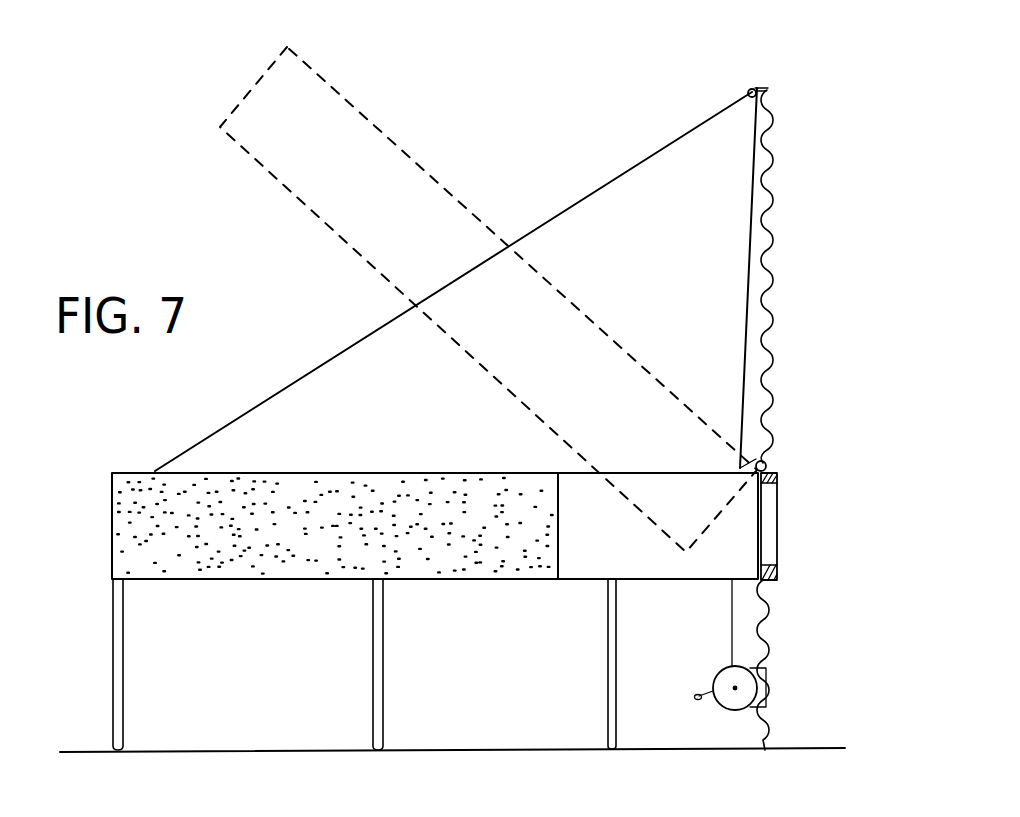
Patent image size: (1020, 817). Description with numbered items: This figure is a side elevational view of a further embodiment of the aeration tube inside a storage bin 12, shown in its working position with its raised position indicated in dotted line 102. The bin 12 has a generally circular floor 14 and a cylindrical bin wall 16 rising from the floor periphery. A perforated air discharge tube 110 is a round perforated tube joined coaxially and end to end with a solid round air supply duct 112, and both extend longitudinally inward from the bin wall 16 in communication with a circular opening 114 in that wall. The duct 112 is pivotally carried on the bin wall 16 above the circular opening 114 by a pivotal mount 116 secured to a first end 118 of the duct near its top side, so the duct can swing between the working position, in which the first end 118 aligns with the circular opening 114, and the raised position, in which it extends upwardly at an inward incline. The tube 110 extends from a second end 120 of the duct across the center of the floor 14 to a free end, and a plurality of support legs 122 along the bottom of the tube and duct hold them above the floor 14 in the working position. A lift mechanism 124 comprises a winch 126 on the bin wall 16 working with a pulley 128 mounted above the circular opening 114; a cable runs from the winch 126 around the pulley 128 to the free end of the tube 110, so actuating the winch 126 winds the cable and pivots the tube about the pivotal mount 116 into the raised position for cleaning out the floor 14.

The bin 12 is at (782, 194).
The floor 14 is at (513, 750).
The bin wall 16 is at (773, 243).
The tilted bin (raised position) 102 is at (488, 276).
The perforated air discharge tube 110 is at (402, 498).
The air supply duct 112 is at (597, 568).
The circular opening 114 is at (772, 513).
The pivotal mount 116 is at (766, 461).
The first end 118 is at (750, 552).
The second end 120 is at (565, 550).
The support legs 122 is at (615, 697).
The lift mechanism 124 is at (781, 661).
The winch 126 is at (748, 697).
The pulley 128 is at (757, 84).